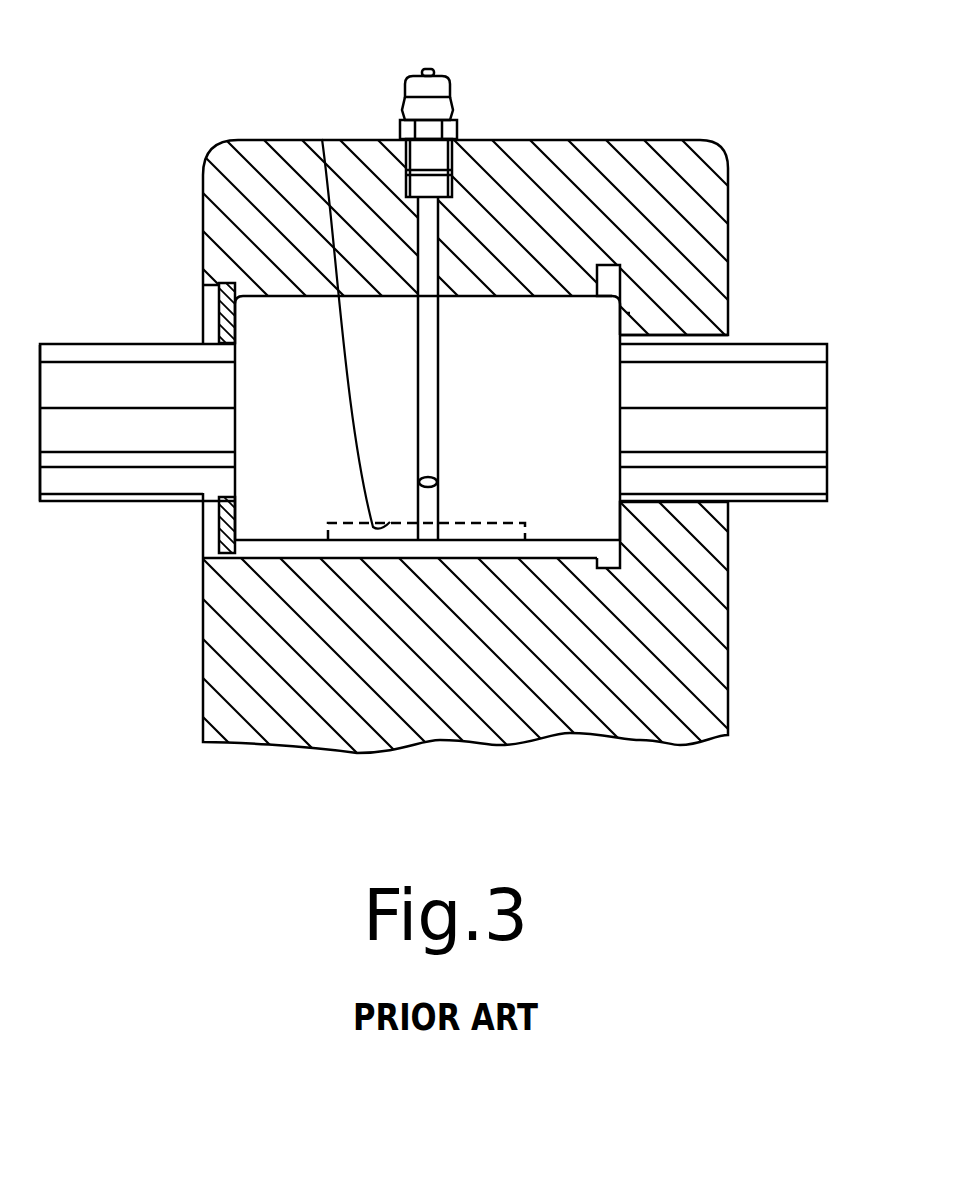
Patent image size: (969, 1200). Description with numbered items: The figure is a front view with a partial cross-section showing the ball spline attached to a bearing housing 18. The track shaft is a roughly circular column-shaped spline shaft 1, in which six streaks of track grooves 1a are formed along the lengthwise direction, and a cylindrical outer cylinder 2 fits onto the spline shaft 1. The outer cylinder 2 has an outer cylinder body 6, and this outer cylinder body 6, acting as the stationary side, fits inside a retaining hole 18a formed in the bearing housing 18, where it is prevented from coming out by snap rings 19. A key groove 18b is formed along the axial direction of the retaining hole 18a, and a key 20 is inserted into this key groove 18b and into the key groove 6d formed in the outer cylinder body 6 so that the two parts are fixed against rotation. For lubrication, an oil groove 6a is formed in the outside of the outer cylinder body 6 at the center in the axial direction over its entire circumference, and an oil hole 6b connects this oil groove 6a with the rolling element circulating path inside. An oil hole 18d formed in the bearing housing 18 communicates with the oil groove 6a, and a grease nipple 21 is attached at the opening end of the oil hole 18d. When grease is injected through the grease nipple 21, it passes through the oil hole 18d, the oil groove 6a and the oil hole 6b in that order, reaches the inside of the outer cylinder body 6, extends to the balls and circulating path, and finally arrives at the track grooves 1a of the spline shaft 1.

The spline shaft 1 is at (811, 333).
The track grooves 1a is at (92, 441).
The outer cylinder 2 is at (630, 313).
The outer cylinder body 6 is at (287, 330).
The oil groove 6a is at (431, 370).
The oil hole 6b is at (434, 480).
The key groove 6d is at (322, 139).
The bearing housing 18 is at (734, 151).
The retaining hole 18a is at (580, 297).
The key groove 18b is at (272, 549).
The oil hole 18d is at (428, 240).
The snap rings 19 is at (212, 304).
The key 20 is at (350, 548).
The grease nipple 21 is at (448, 84).